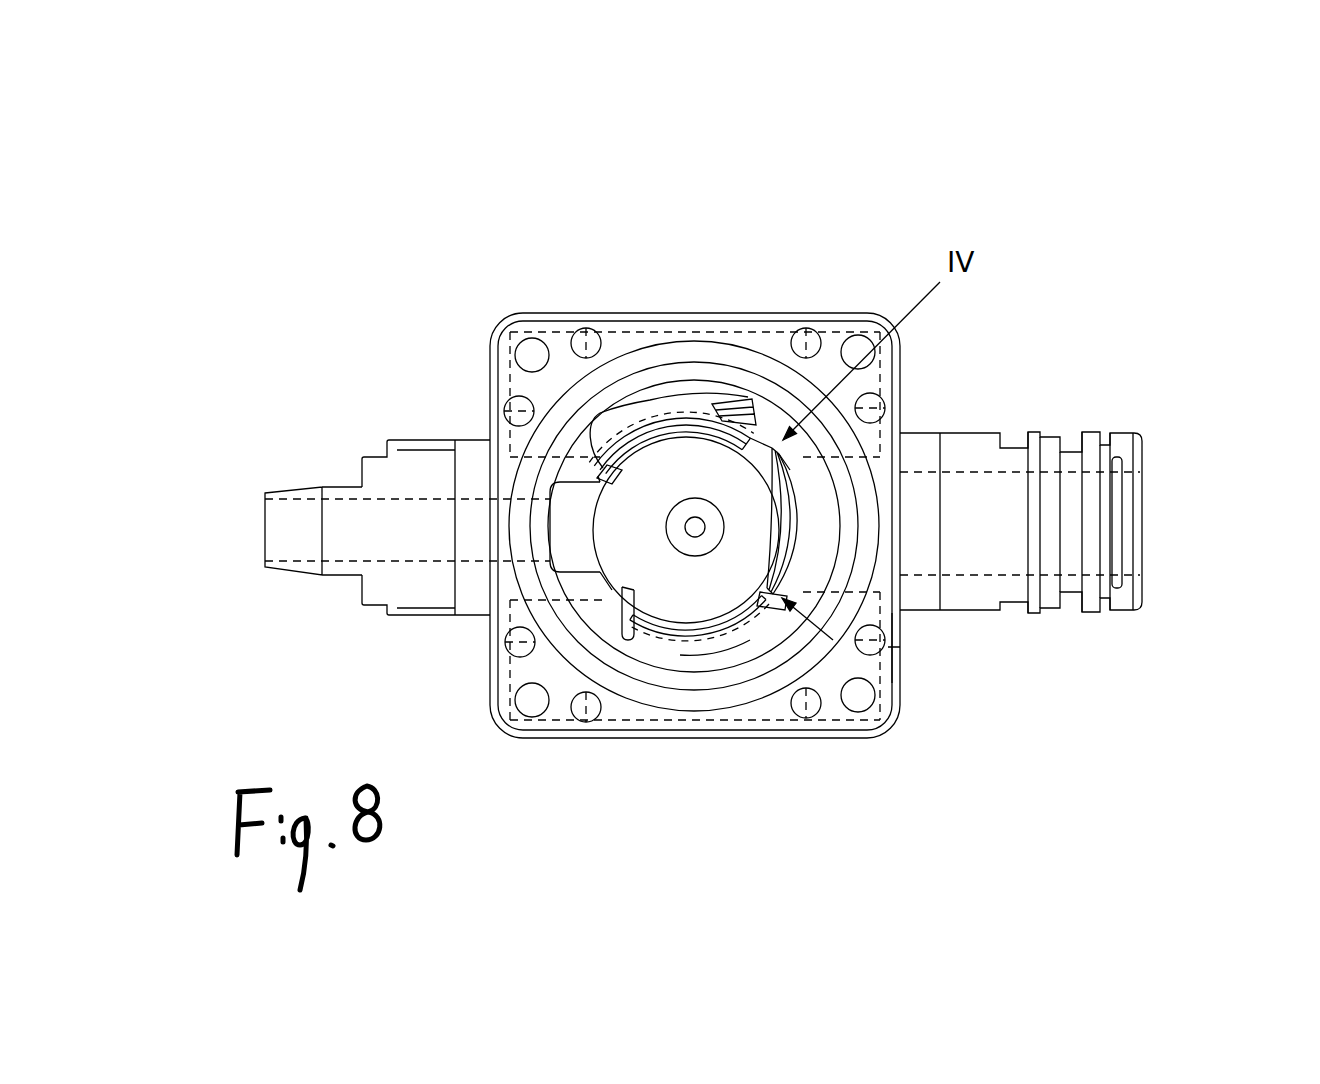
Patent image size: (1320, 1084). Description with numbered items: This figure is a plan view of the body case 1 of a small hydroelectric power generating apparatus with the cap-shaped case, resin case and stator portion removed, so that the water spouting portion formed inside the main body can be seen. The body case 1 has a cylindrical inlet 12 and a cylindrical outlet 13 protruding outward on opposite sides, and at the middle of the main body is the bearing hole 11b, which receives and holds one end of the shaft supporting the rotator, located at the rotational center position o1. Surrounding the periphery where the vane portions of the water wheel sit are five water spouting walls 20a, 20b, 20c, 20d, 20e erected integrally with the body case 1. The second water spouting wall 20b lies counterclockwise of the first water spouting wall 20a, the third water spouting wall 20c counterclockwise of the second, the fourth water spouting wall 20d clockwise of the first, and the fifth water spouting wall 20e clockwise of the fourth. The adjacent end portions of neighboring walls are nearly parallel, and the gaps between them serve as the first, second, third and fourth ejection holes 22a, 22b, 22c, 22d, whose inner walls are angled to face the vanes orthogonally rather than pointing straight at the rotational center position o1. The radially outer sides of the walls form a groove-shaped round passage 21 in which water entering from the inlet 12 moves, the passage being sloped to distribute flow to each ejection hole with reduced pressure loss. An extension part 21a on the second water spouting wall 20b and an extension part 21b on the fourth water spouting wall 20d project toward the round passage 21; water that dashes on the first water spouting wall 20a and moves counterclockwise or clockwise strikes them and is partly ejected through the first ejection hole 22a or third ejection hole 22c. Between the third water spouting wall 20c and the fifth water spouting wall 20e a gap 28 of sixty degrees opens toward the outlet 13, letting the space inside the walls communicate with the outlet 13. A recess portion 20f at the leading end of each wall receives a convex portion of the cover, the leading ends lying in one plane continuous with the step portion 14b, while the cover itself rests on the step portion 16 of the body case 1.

The body case 1 is at (833, 332).
The bearing hole 11b is at (690, 507).
The rotational center position o1 is at (684, 533).
The inlet 12 is at (1142, 508).
The outlet 13 is at (290, 490).
The step portion 14b is at (740, 675).
The step portion 16 is at (833, 640).
The first water spouting wall 20a is at (800, 533).
The second water spouting wall 20b is at (677, 400).
The third water spouting wall 20c is at (595, 472).
The fourth water spouting wall 20d is at (688, 660).
The fifth water spouting wall 20e is at (600, 595).
The recess portion 20f is at (725, 400).
The round passage 21 is at (662, 640).
The extension part 21a is at (742, 425).
The extension part 21b is at (775, 633).
The first ejection hole 22a is at (808, 330).
The second ejection hole 22b is at (630, 420).
The third ejection hole 22c is at (830, 670).
The fourth ejection hole 22d is at (586, 720).
The gap 28 is at (598, 476).